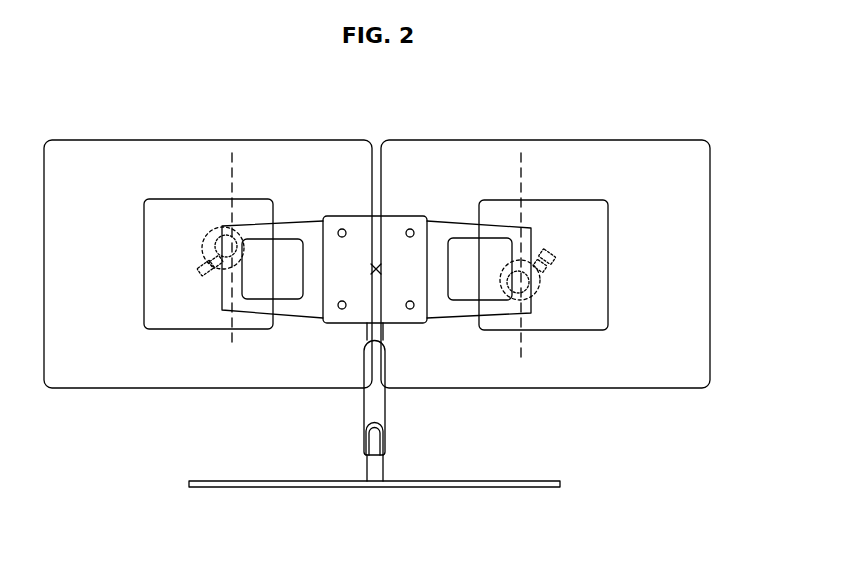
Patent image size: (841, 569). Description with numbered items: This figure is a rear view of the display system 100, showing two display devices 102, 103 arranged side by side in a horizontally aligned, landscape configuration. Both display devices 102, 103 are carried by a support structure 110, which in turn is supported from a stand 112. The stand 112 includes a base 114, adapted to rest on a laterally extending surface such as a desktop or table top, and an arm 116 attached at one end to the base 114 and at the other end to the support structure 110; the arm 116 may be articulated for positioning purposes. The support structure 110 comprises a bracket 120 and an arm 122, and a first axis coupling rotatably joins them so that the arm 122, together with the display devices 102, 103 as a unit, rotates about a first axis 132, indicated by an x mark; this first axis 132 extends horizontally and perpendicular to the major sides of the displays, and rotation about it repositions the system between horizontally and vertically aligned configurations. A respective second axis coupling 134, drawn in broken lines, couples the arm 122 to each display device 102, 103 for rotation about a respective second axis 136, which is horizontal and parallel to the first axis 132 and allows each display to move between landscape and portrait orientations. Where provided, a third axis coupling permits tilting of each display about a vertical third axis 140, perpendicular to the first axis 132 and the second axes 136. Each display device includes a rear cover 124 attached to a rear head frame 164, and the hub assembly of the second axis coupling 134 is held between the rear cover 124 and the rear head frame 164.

The display system 100 is at (498, 110).
The display device 102 is at (593, 140).
The display device 103 is at (90, 140).
The support structure 110 is at (343, 348).
The stand 112 is at (402, 420).
The base 114 is at (497, 484).
The arm 116 is at (372, 400).
The bracket 120 is at (388, 229).
The arm 122 is at (307, 230).
The rear cover 124 is at (185, 212).
The first axis 132 is at (372, 267).
The second axis coupling 134 is at (203, 225).
The second axis 136 is at (212, 244).
The third axis 140 is at (233, 183).
The rear head frame 164 is at (110, 204).